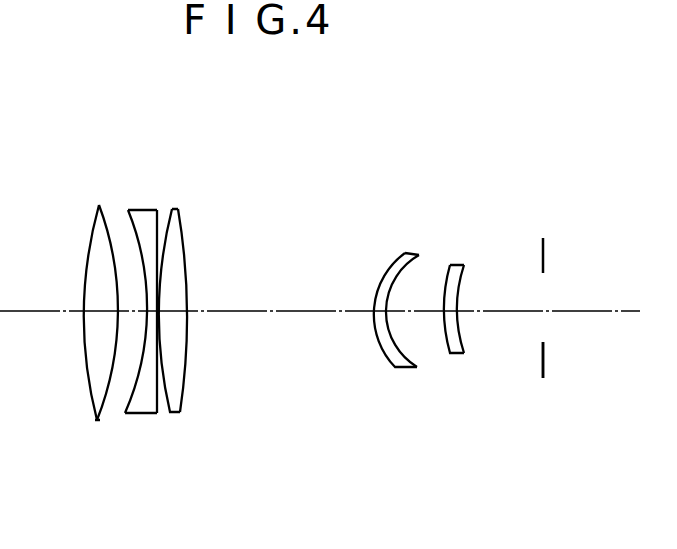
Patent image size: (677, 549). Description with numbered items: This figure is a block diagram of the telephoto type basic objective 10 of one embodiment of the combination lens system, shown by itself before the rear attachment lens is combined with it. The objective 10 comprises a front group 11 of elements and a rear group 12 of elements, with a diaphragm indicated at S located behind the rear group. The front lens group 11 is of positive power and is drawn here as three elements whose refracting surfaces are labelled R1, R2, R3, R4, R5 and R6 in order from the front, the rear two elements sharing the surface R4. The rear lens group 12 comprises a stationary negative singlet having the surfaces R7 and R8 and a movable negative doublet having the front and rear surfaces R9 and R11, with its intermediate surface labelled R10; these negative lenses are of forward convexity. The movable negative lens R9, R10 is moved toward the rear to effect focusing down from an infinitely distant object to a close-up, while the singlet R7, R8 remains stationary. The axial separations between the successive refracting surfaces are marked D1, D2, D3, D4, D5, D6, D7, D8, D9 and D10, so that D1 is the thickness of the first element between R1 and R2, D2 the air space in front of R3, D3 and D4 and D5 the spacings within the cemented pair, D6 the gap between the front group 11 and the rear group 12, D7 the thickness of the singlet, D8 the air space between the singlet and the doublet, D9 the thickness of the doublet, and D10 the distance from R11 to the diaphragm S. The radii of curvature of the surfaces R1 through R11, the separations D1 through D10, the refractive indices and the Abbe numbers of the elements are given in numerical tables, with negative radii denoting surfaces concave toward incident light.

The basic objective of the telephoto type 10 is at (447, 135).
The front group 11 is at (196, 186).
The rear group 12 is at (390, 186).
The axial separation D1 is at (97, 310).
The axial separation D2 is at (131, 312).
The axial separation D3 is at (162, 280).
The axial separation D4 is at (160, 303).
The axial separation D5 is at (177, 309).
The axial separation D6 is at (303, 309).
The axial separation D7 is at (377, 300).
The axial separation D8 is at (403, 292).
The axial separation D9 is at (443, 303).
The axial separation D10 is at (460, 298).
The refracting surface R1 is at (92, 402).
The refracting surface R2 is at (107, 408).
The refracting surface R3 is at (127, 403).
The refracting surface R4 is at (158, 412).
The refracting surface R5 is at (171, 403).
The refracting surface R6 is at (185, 402).
The front surface of stationary negative singlet R7 is at (395, 367).
The rear surface of stationary negative singlet R8 is at (419, 367).
The front surface of movable negative doublet R9 is at (446, 350).
The refracting surface of movable negative doublet R10 is at (458, 354).
The rear surface of movable negative doublet R11 is at (466, 343).
The diaphragm S is at (546, 260).